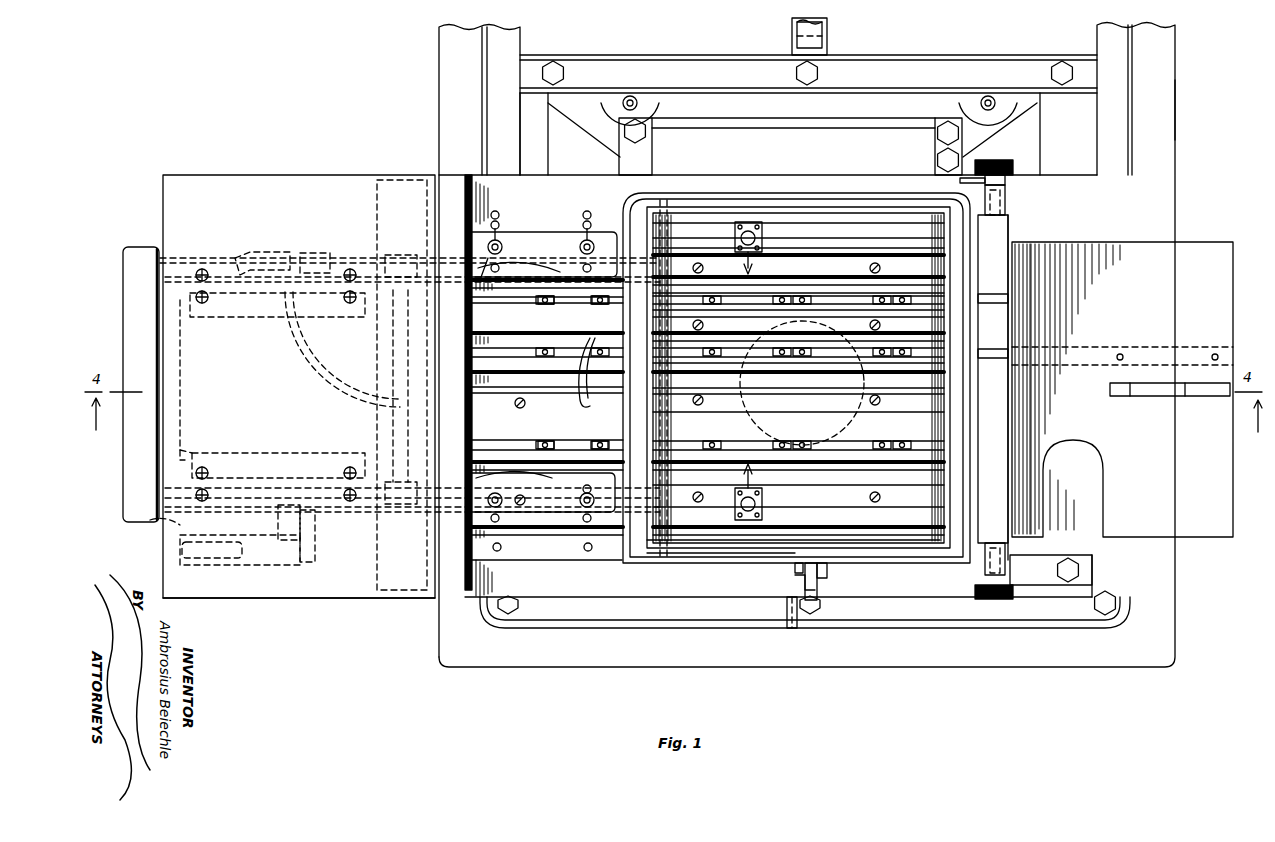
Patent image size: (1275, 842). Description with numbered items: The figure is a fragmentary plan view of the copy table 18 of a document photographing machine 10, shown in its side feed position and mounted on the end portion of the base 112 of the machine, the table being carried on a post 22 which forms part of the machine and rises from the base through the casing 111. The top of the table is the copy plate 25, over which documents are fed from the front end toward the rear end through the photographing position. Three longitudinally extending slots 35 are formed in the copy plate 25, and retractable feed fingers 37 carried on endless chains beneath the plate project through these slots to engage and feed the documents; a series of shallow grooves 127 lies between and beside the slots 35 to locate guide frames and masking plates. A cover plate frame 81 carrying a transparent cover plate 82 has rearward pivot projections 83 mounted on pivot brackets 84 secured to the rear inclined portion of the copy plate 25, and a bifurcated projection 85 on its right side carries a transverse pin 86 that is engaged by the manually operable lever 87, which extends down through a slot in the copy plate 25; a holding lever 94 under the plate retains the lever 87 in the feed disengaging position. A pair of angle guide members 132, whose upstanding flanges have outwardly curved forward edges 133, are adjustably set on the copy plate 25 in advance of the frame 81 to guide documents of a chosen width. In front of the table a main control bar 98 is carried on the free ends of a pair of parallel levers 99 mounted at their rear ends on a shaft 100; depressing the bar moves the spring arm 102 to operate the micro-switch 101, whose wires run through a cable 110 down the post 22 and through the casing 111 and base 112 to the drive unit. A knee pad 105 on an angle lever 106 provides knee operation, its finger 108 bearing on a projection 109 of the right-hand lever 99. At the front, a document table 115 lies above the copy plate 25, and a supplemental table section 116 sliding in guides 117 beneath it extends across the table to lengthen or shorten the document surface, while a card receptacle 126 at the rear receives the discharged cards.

The machine 10 is at (1177, 135).
The copy table 18 is at (272, 174).
The post 22 is at (865, 412).
The copy plate 25 is at (1000, 232).
The longitudinally extending slots 35 is at (600, 300).
The retractable feed fingers 37 is at (546, 300).
The cover plate frame 81 is at (742, 556).
The transparent cover plate 82 is at (900, 548).
The pivot projection 83 is at (1005, 205).
The pivot brackets 84 is at (1010, 178).
The bifurcated projection 85 is at (795, 582).
The pin 86 is at (795, 572).
The manually operable lever 87 is at (818, 592).
The holding lever 94 is at (787, 612).
The main control bar 98 is at (141, 384).
The levers 99 is at (178, 257).
The shaft 100 is at (388, 425).
The micro-switch 101 is at (252, 255).
The spring arm 102 is at (312, 255).
The knee pad 105 is at (158, 525).
The angle lever 106 is at (222, 545).
The finger 108 is at (302, 540).
The projection 109 is at (300, 516).
The cable 110 is at (372, 375).
The casing 111 is at (490, 90).
The base 112 is at (437, 55).
The document table 115 is at (299, 587).
The supplemental table section 116 is at (376, 190).
The guides 117 is at (280, 320).
The card receptacle 126 is at (1122, 389).
The shallow grooves 127 is at (594, 376).
The angle guide members 132 is at (548, 232).
The curved forward edges 133 is at (480, 300).